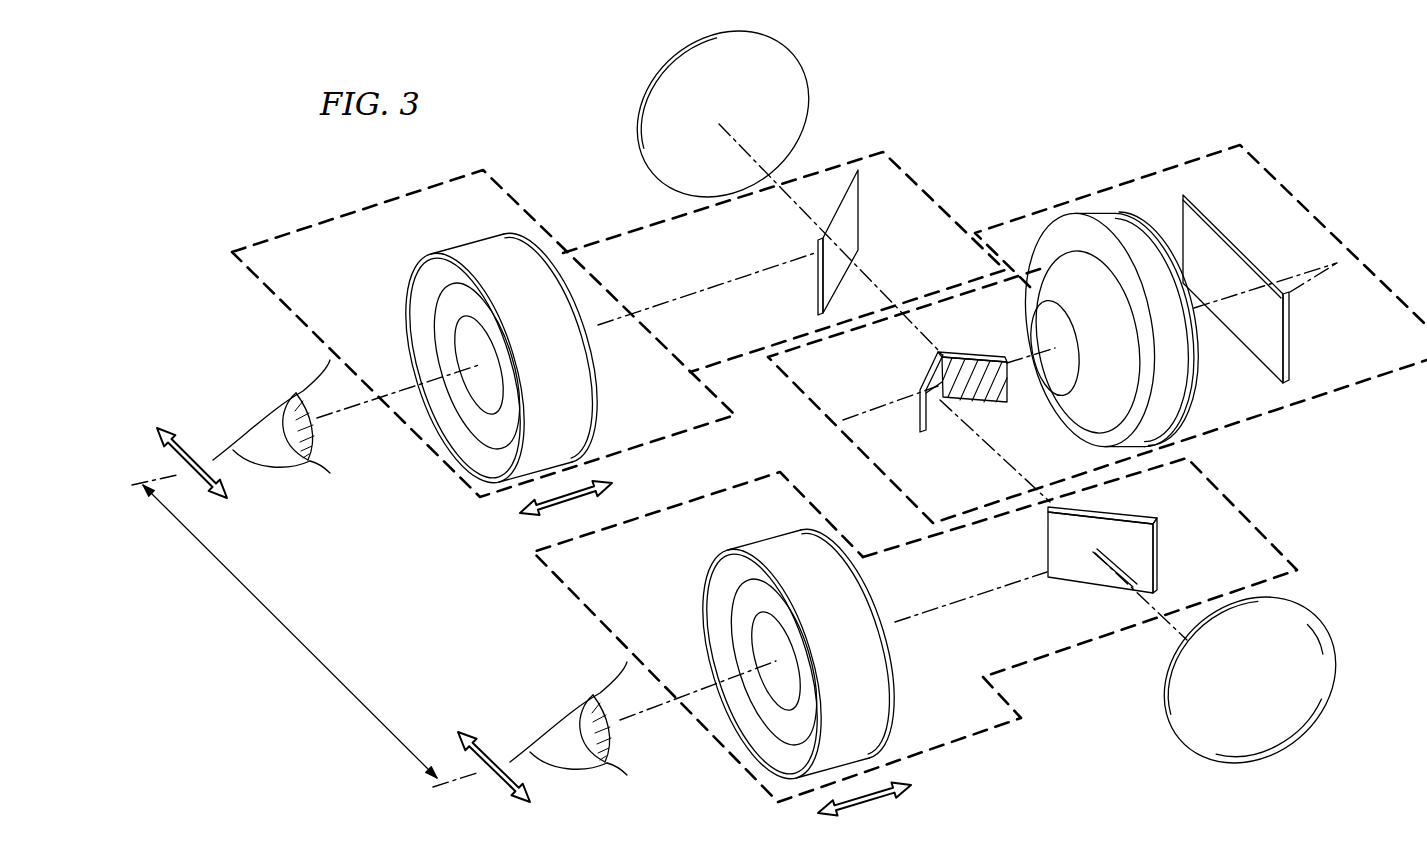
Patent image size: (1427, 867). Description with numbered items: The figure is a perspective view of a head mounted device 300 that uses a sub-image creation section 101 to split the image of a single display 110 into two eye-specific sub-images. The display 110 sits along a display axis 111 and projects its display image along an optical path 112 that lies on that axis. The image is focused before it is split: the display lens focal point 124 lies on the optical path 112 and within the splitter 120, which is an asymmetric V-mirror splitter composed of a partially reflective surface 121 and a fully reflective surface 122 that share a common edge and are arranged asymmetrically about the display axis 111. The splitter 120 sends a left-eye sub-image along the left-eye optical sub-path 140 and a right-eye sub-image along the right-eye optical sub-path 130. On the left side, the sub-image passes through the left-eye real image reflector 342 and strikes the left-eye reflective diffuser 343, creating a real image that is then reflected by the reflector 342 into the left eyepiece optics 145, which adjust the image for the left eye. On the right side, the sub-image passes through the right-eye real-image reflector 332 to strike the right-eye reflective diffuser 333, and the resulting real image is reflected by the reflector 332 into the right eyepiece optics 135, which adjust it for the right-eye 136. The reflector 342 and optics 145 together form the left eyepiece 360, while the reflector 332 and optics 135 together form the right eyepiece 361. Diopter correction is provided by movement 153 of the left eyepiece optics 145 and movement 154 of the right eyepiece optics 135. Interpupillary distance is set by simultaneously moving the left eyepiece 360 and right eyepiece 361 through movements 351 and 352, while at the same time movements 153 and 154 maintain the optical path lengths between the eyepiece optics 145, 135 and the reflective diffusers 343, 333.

The head mounted device 300 is at (966, 92).
The sub-image creation section 101 is at (1100, 190).
The display 110 is at (1237, 246).
The display axis 111 is at (1320, 280).
The optical path 112 is at (1200, 312).
The splitter 120 is at (969, 391).
The partially reflective surface 121 is at (965, 352).
The fully reflective surface 122 is at (928, 420).
The display lens focal point 124 is at (948, 383).
The right-eye optical sub-path 130 is at (1000, 462).
The right eyepiece optics 135 is at (778, 547).
The right-eye 136 is at (586, 772).
The left-eye optical sub-path 140 is at (873, 291).
The left eyepiece optics 145 is at (475, 250).
The movement of left eyepiece optics 153 is at (536, 518).
The movement of right eyepiece optics 154 is at (871, 815).
The right-eye real-image reflector 332 is at (1046, 541).
The right-eye reflective diffuser 333 is at (1266, 699).
The left-eye real image reflector 342 is at (853, 222).
The left-eye reflective diffuser 343 is at (767, 99).
The movement of left eyepiece 351 is at (175, 462).
The movement of right eyepiece 352 is at (494, 781).
The left eyepiece 360 is at (328, 222).
The right eyepiece 361 is at (576, 600).